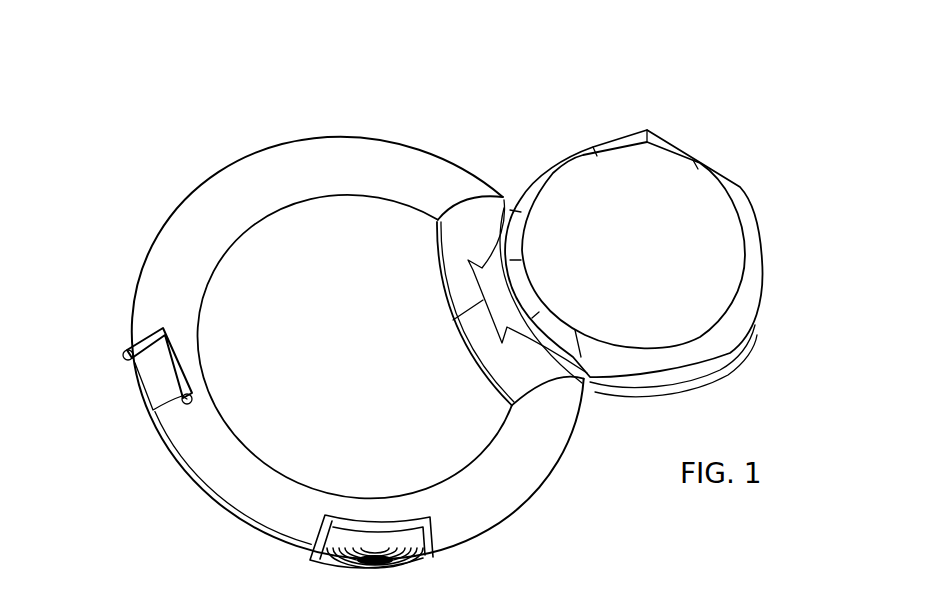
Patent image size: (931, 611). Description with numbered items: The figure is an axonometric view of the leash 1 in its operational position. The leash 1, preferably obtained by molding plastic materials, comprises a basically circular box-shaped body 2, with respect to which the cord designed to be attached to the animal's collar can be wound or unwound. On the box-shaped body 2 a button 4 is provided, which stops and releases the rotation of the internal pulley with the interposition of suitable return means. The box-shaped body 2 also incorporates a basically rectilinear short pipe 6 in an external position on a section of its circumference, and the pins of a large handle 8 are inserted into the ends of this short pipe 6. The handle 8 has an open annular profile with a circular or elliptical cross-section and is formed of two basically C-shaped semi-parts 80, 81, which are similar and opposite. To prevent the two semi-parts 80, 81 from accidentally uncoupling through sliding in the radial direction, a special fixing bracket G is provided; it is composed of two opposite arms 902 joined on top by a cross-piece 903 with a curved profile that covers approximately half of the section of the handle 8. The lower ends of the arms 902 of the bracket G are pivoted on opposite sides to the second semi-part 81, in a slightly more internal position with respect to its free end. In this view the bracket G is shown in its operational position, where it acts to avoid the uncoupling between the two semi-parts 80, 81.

The leash 1 is at (528, 124).
The box-shaped body 2 is at (710, 218).
The button 4 is at (377, 567).
The short pipe 6 is at (483, 354).
The handle 8 is at (215, 166).
The first semi-part 80 is at (165, 290).
The second semi-part 81 is at (457, 518).
The arms 902 is at (177, 360).
The cross-piece 903 is at (123, 353).
The fixing bracket G is at (190, 380).